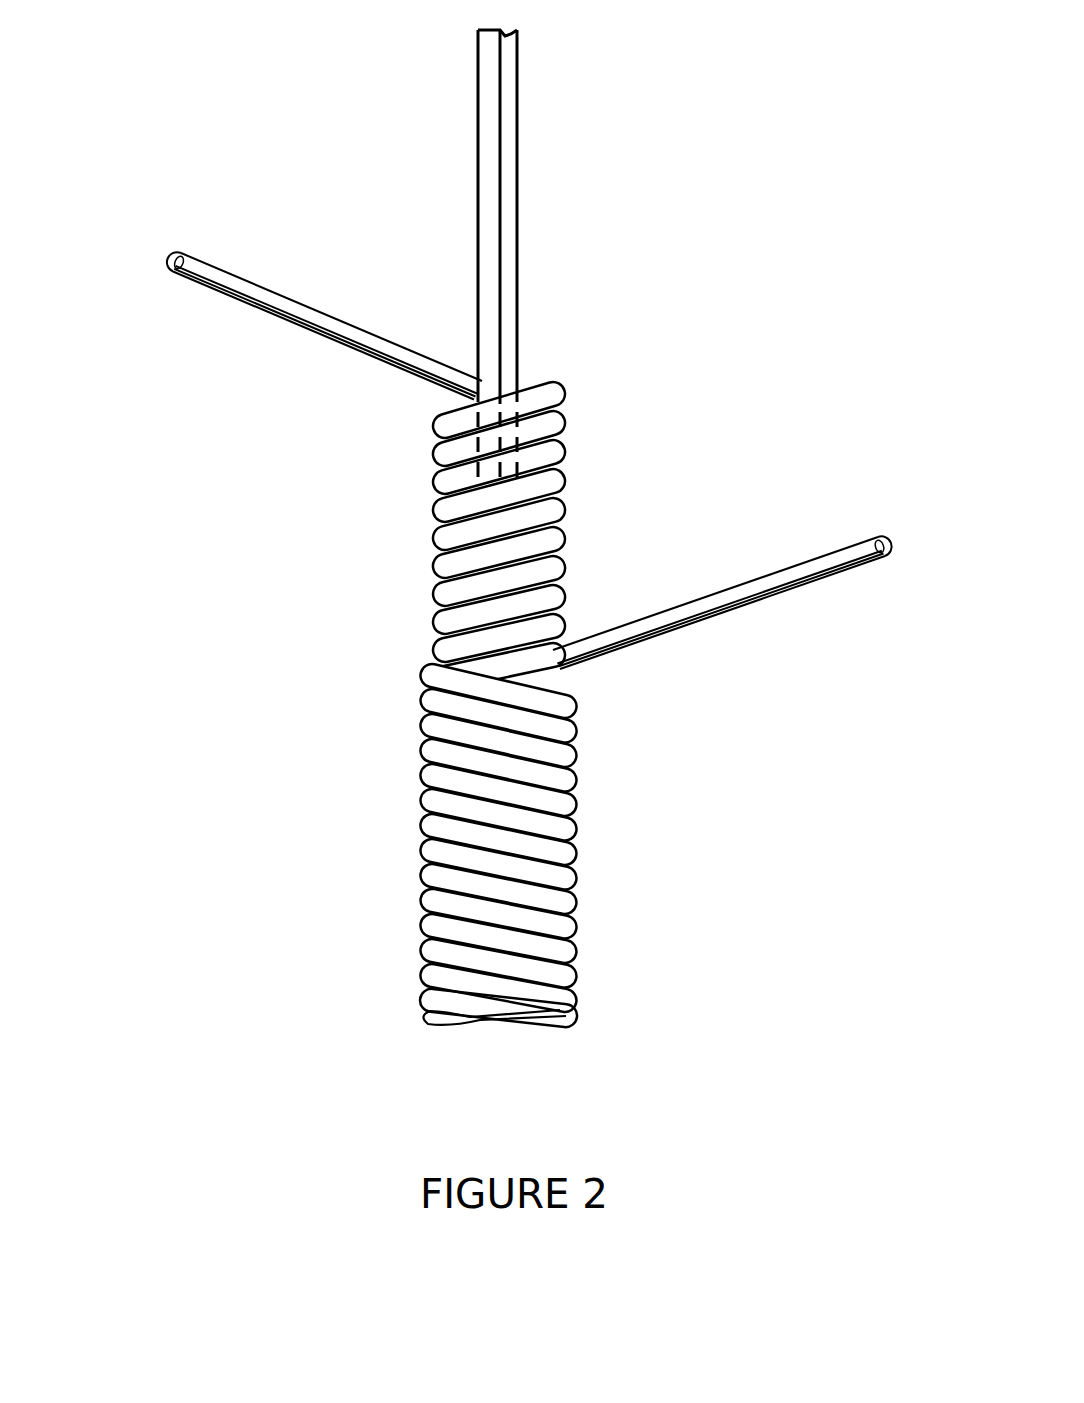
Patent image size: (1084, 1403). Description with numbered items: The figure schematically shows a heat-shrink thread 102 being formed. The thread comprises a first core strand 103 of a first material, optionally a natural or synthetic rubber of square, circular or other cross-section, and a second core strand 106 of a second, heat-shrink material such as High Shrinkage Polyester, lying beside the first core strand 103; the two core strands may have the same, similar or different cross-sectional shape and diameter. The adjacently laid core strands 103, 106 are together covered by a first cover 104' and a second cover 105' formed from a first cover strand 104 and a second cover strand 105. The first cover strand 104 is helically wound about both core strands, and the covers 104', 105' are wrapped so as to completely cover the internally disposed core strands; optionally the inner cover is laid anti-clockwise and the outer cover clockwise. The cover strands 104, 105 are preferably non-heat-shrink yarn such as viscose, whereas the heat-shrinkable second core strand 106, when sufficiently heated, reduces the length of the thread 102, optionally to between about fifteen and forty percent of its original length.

The heat-shrink thread 102 is at (424, 207).
The first core strand 103 is at (498, 58).
The first cover strand 104 is at (324, 330).
The first cover 104' is at (568, 535).
The second cover strand 105 is at (722, 609).
The second cover 105' is at (427, 845).
The second core strand 106 is at (510, 160).